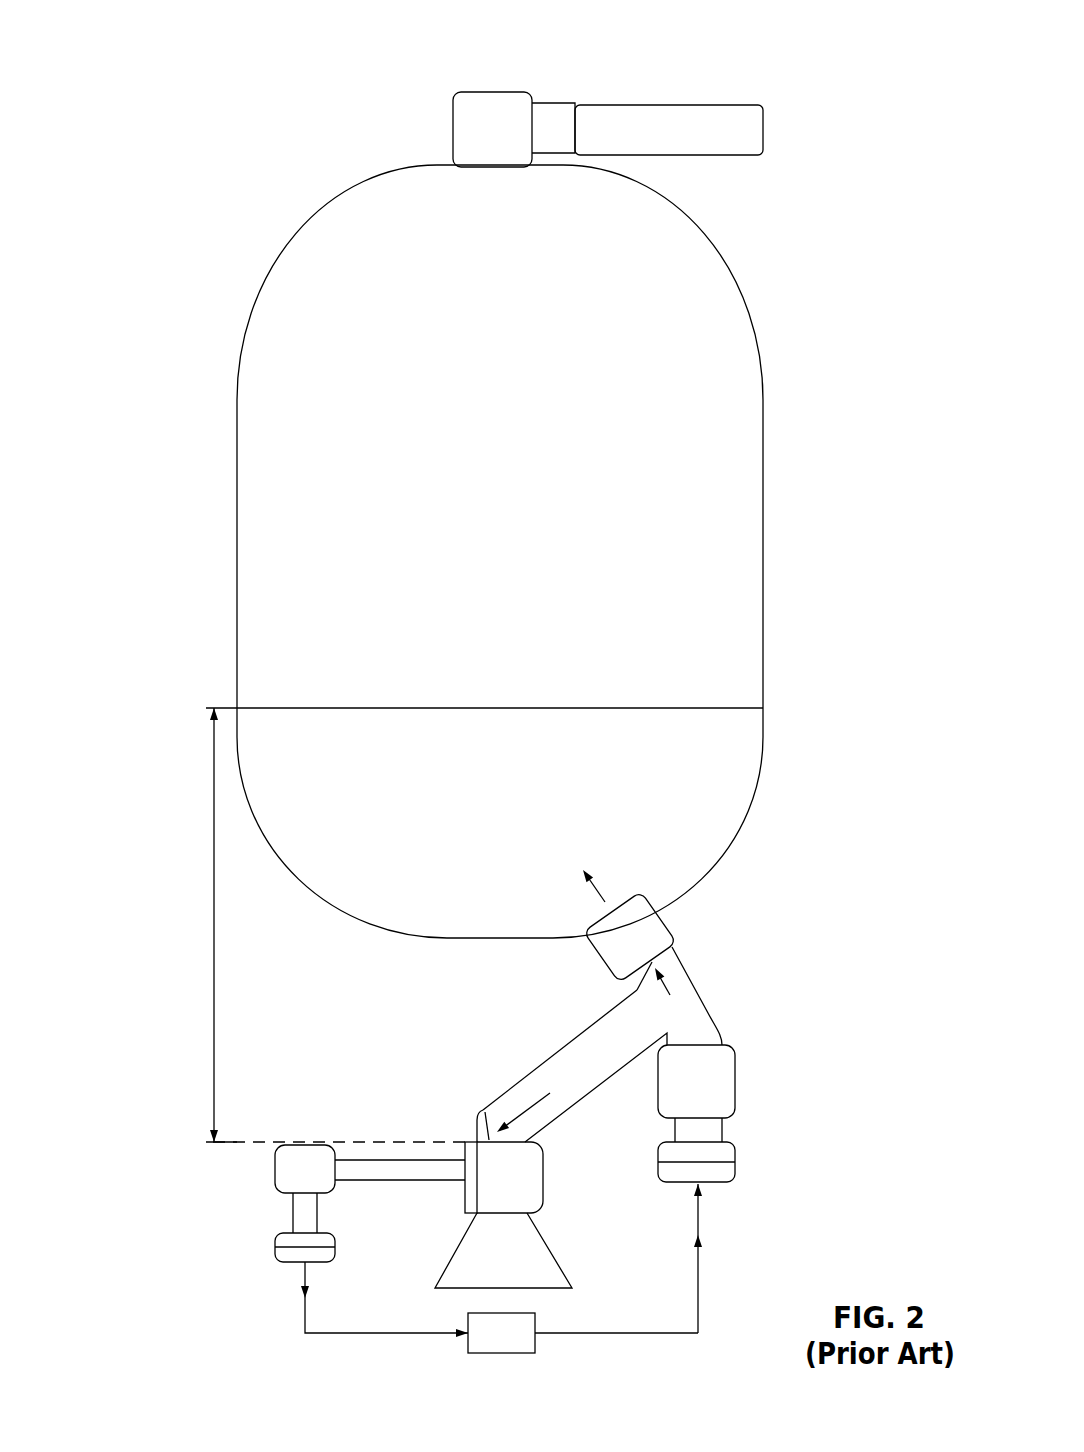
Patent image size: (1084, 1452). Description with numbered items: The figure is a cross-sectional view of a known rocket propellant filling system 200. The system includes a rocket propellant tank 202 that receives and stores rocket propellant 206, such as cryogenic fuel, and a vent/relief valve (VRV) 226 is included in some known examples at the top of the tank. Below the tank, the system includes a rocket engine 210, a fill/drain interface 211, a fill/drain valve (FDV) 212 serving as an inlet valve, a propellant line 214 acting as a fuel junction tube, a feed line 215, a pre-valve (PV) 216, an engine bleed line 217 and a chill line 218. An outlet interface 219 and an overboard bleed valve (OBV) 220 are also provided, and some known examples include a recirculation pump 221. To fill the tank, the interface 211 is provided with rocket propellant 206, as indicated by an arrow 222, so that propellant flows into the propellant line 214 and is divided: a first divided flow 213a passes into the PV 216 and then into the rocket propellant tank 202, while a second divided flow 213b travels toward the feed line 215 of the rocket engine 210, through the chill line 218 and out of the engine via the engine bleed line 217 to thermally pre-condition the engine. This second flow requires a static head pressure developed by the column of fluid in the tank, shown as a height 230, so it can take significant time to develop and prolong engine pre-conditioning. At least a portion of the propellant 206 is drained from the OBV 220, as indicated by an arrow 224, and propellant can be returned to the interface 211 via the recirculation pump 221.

The rocket propellant filling system 200 is at (143, 55).
The rocket propellant tank 202 is at (797, 332).
The rocket propellant 206 is at (524, 813).
The rocket engine 210 is at (562, 1297).
The interface 211 is at (737, 1172).
The fill/drain valve (FDV) 212 is at (737, 1078).
The first divided flow 213a is at (688, 985).
The second divided flow 213b is at (523, 1107).
The propellant line 214 is at (653, 1010).
The feed line 215 is at (483, 1108).
The pre-valve (PV) 216 is at (668, 922).
The engine bleed line 217 is at (437, 1170).
The chill line 218 is at (463, 1190).
The interface 219 is at (275, 1245).
The overboard bleed valve (OBV) 220 is at (275, 1172).
The recirculation pump 221 is at (478, 1348).
The arrow 222 is at (700, 1213).
The arrow 224 is at (300, 1292).
The vent/relief valve (VRV) 226 is at (472, 90).
The height 230 is at (214, 830).